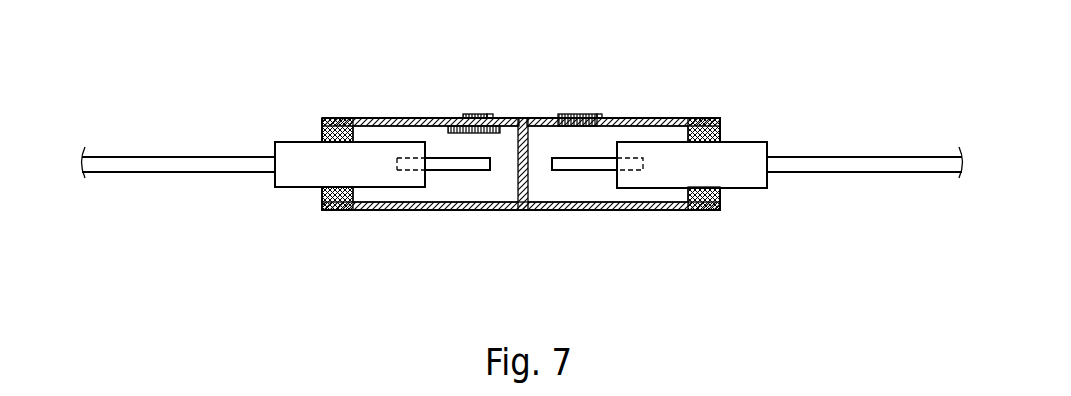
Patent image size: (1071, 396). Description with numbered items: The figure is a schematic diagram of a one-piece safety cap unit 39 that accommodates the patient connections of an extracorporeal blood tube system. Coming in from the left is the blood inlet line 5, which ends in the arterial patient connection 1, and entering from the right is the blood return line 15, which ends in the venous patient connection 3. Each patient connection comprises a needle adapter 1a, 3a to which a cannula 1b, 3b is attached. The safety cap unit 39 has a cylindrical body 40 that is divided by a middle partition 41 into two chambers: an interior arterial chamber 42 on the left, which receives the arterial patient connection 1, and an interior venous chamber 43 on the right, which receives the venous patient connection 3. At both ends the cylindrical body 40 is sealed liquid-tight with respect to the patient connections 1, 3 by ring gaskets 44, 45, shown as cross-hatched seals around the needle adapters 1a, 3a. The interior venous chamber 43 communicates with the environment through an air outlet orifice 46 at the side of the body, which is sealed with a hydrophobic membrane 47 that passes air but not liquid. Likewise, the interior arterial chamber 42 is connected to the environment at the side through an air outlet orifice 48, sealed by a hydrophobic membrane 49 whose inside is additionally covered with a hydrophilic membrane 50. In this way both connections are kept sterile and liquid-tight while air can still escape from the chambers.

The arterial patient connection 1 is at (306, 128).
The needle adapter 1a is at (292, 178).
The cannula 1b is at (458, 168).
The venous patient connection 3 is at (740, 127).
The needle adapter 3a is at (668, 172).
The cannula 3b is at (600, 168).
The blood inlet line 5 is at (155, 162).
The blood return line 15 is at (853, 163).
The safety cap unit 39 is at (540, 104).
The cylindrical body 40 is at (405, 210).
The middle partition 41 is at (518, 210).
The interior arterial chamber 42 is at (372, 128).
The interior venous chamber 43 is at (655, 128).
The ring gasket 44 is at (330, 210).
The ring gasket 45 is at (700, 210).
The air outlet orifice 46 is at (578, 108).
The hydrophobic membrane 47 is at (596, 118).
The air outlet orifice 48 is at (477, 108).
The hydrophobic membrane 49 is at (490, 122).
The hydrophilic membrane 50 is at (452, 123).